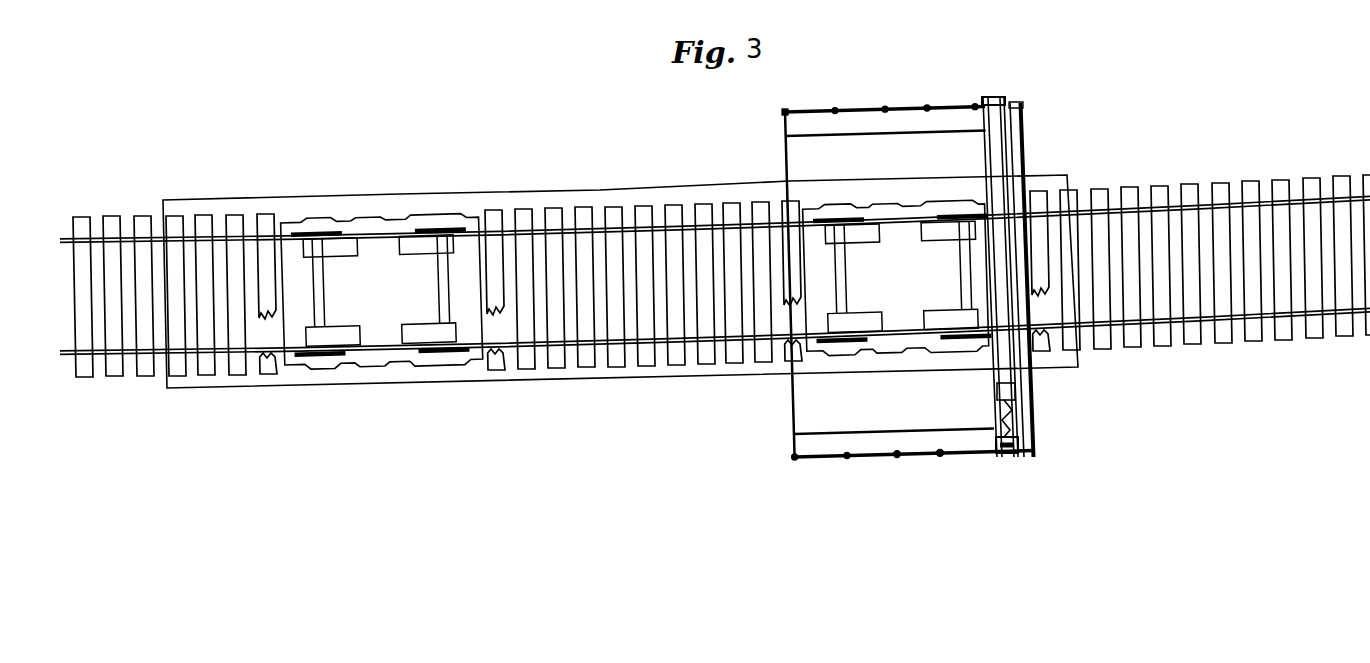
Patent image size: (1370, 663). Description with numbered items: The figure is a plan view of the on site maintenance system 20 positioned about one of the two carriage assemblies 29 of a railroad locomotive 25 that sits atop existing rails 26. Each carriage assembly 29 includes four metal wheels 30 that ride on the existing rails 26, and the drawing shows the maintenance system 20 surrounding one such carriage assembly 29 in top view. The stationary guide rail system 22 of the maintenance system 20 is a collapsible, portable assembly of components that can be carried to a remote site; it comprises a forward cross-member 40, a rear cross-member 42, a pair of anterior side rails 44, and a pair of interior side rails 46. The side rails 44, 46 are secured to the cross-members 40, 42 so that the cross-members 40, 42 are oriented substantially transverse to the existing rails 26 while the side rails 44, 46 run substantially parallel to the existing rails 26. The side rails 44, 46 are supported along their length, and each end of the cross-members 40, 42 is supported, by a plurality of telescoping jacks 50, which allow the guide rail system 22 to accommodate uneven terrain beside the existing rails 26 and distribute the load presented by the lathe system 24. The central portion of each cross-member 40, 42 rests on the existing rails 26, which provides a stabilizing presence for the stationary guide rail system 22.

The on site maintenance system 20 is at (915, 282).
The stationary guide rail system 22 is at (908, 112).
The lathe system 24 is at (1017, 139).
The railroad locomotive 25 is at (447, 395).
The existing rails 26 is at (561, 228).
The carriage assembly 29 is at (386, 309).
The metal wheels 30 is at (345, 244).
The forward cross-member 40 is at (793, 400).
The rear cross-member 42 is at (1035, 404).
The anterior side rails 44 is at (853, 108).
The interior side rails 46 is at (814, 140).
The telescoping jacks 50 is at (898, 460).